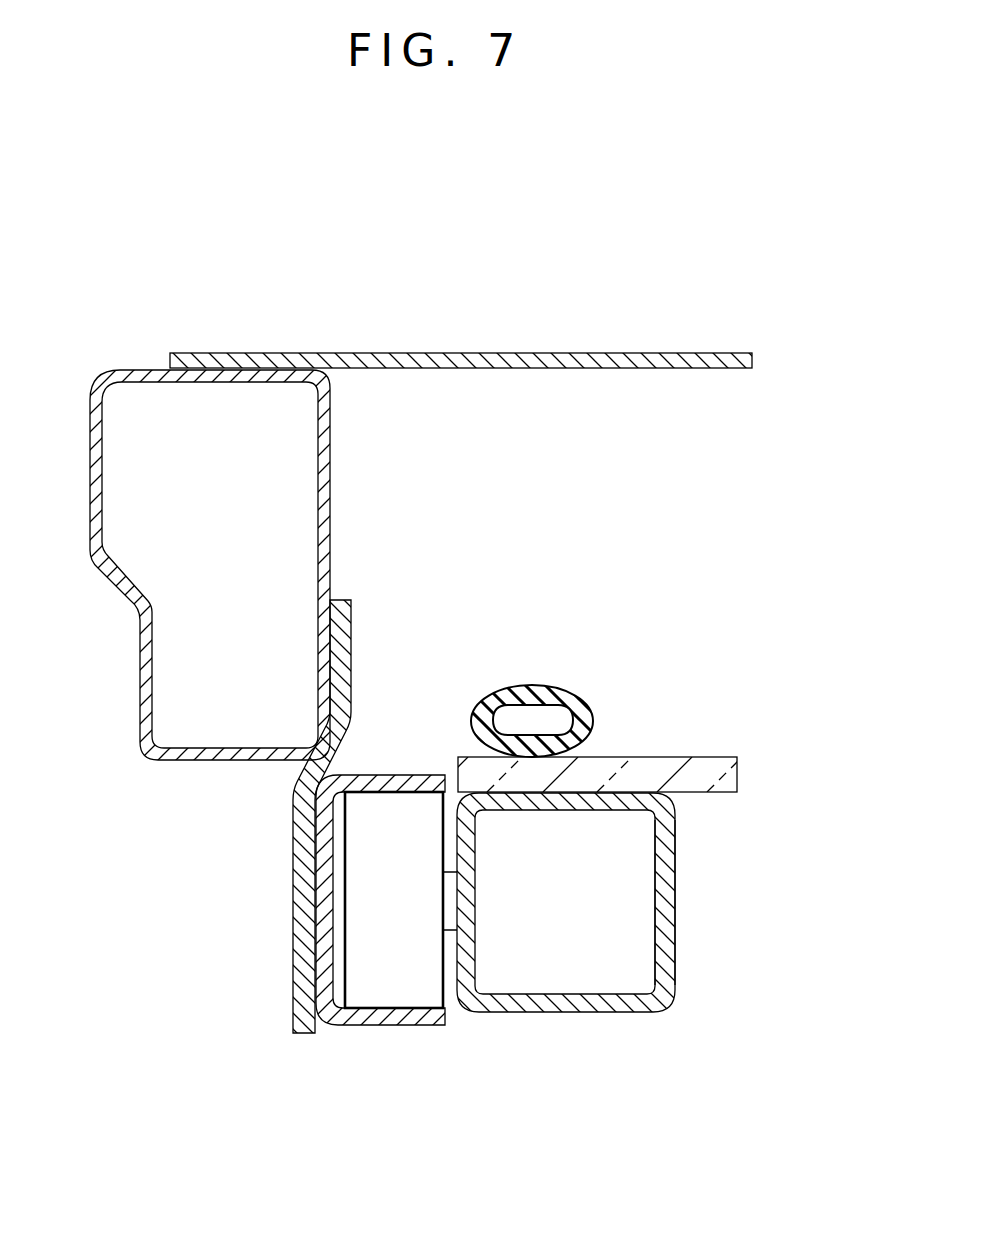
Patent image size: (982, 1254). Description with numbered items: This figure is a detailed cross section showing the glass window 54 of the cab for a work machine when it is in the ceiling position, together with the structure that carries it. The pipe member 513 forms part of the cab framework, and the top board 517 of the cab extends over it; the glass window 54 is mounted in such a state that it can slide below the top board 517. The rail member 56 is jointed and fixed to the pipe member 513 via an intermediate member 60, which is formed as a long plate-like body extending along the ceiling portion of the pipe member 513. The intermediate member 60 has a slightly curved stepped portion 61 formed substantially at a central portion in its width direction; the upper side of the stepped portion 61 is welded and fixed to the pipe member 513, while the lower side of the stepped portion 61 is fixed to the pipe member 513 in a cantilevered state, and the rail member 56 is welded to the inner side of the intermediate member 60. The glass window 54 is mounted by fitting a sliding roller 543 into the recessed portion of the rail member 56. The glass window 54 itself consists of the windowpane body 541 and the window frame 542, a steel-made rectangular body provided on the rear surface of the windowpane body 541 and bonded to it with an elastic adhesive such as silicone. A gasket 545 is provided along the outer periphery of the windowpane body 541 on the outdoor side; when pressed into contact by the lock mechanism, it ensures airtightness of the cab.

The pipe member 513 is at (127, 371).
The top board 517 is at (633, 357).
The gasket 545 is at (531, 687).
The windowpane body 541 is at (702, 767).
The sliding roller 543 is at (392, 815).
The stepped portion 61 is at (300, 772).
The intermediate member 60 is at (292, 1003).
The rail member 56 is at (380, 1019).
The glass window 54 is at (557, 1013).
The window frame 542 is at (660, 1011).